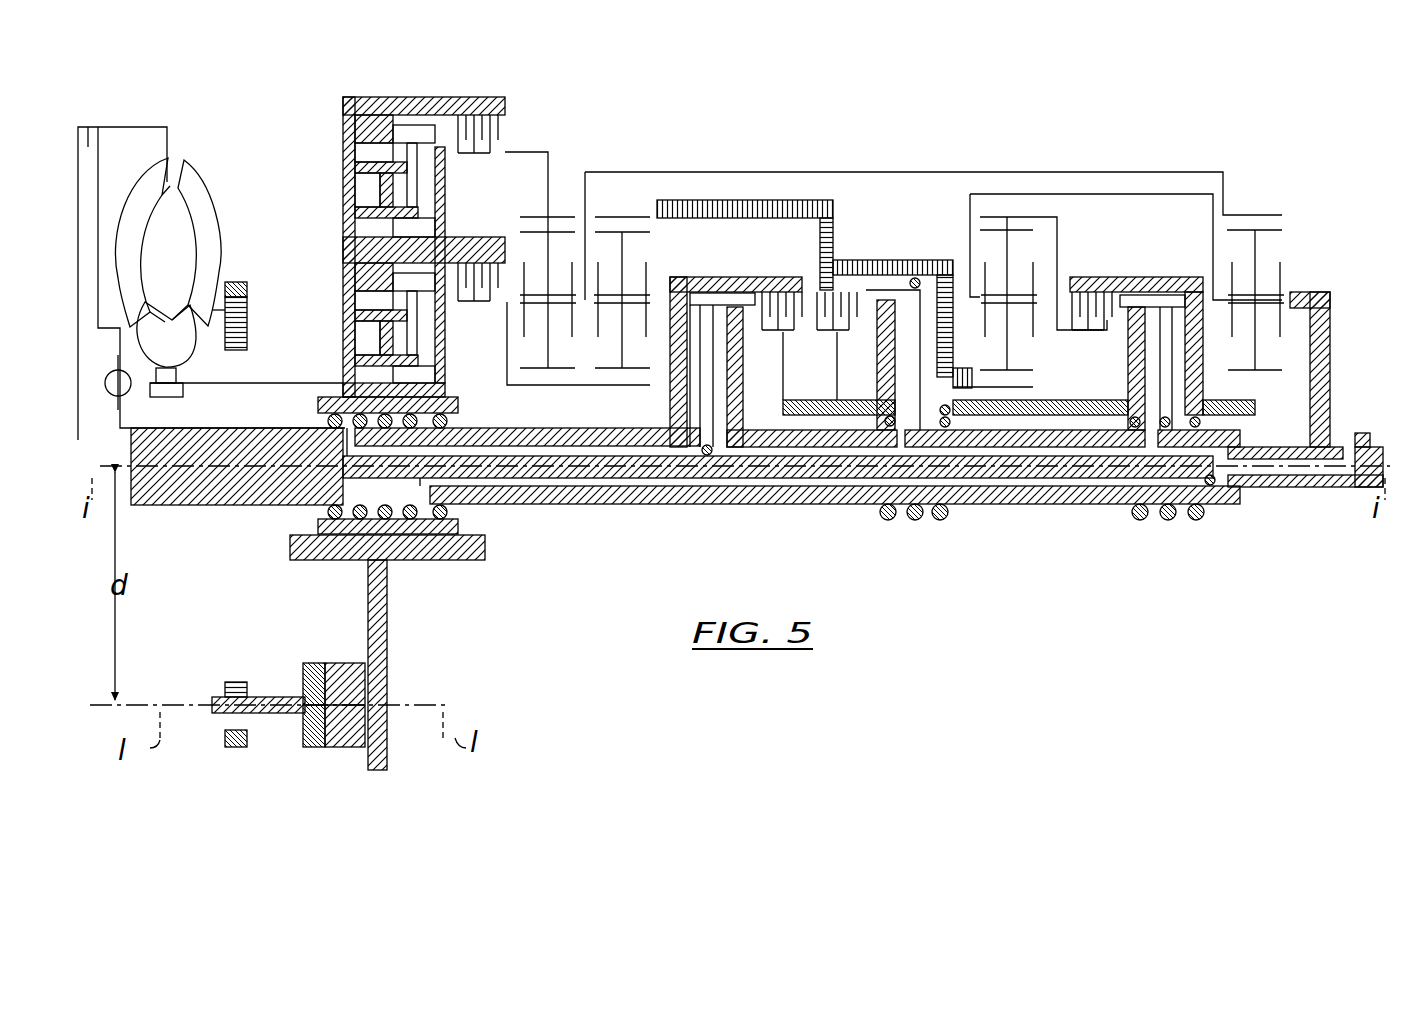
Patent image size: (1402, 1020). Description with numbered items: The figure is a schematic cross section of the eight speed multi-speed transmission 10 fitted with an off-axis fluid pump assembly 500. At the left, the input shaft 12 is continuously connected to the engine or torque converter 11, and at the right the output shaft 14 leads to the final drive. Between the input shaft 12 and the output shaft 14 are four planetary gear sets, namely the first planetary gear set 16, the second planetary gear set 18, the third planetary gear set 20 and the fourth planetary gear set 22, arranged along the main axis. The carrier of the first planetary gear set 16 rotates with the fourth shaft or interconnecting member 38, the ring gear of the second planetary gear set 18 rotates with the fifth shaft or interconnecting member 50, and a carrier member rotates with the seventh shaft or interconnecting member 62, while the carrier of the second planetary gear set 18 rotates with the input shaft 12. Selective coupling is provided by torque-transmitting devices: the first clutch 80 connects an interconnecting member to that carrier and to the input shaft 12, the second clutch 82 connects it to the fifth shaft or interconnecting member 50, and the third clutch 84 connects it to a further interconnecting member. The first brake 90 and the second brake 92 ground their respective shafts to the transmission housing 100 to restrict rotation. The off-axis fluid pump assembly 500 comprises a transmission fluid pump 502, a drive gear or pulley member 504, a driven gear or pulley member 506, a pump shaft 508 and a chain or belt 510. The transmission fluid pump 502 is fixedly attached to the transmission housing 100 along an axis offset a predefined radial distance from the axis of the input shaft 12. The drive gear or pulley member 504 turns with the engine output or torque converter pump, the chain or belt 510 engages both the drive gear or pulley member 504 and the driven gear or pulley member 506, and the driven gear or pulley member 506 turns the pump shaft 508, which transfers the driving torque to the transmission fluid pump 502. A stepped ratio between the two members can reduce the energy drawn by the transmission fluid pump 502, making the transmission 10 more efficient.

The multi-speed transmission 10 is at (290, 86).
The torque converter 11 is at (190, 162).
The input shaft 12 is at (633, 503).
The output shaft 14 is at (1332, 345).
The first planetary gear set 16 is at (564, 184).
The second planetary gear set 18 is at (618, 394).
The third planetary gear set 20 is at (1037, 346).
The fourth planetary gear set 22 is at (1295, 250).
The fourth shaft or interconnecting member 38 is at (752, 170).
The fifth shaft or interconnecting member 50 is at (735, 220).
The seventh shaft or interconnecting member 62 is at (1147, 192).
The first clutch 80 is at (752, 256).
The second clutch 82 is at (874, 226).
The third clutch 84 is at (1133, 241).
The first brake 90 is at (338, 248).
The second brake 92 is at (338, 175).
The transmission housing 100 is at (408, 97).
The off-axis fluid pump assembly 500 is at (268, 749).
The transmission fluid pump 502 is at (345, 747).
The drive gear or pulley member 504 is at (248, 322).
The driven gear or pulley member 506 is at (225, 690).
The pump shaft 508 is at (280, 713).
The chain or belt 510 is at (248, 290).